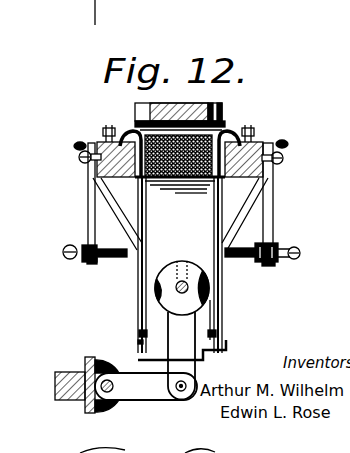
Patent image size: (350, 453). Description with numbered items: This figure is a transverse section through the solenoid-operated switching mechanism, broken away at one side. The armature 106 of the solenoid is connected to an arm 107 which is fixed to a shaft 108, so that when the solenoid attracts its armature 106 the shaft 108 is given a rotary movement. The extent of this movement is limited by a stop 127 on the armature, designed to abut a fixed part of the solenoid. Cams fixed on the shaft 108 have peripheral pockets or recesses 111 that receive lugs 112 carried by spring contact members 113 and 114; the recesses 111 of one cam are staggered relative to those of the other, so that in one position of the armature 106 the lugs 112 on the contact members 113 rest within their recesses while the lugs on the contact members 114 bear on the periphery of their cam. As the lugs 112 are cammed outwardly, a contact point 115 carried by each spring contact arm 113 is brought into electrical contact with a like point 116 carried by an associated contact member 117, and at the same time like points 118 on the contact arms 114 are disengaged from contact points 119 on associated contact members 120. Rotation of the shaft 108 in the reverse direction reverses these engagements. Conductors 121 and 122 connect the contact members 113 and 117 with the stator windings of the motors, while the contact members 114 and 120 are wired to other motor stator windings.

The armature 106 is at (63, 372).
The arm 107 is at (140, 370).
The shaft 108 is at (192, 267).
The peripheral pockets or recesses 111 is at (156, 292).
The lugs 112 is at (170, 290).
The spring contact members 113 is at (152, 236).
The spring contact members 114 is at (222, 324).
The contact point 115 is at (140, 323).
The contact point 116 is at (138, 336).
The contact member 117 is at (138, 273).
The contact points 118 is at (216, 336).
The contact points 119 is at (226, 353).
The contact members 120 is at (272, 318).
The conductor 121 is at (122, 140).
The conductor 122 is at (78, 142).
The stop 127 is at (88, 408).